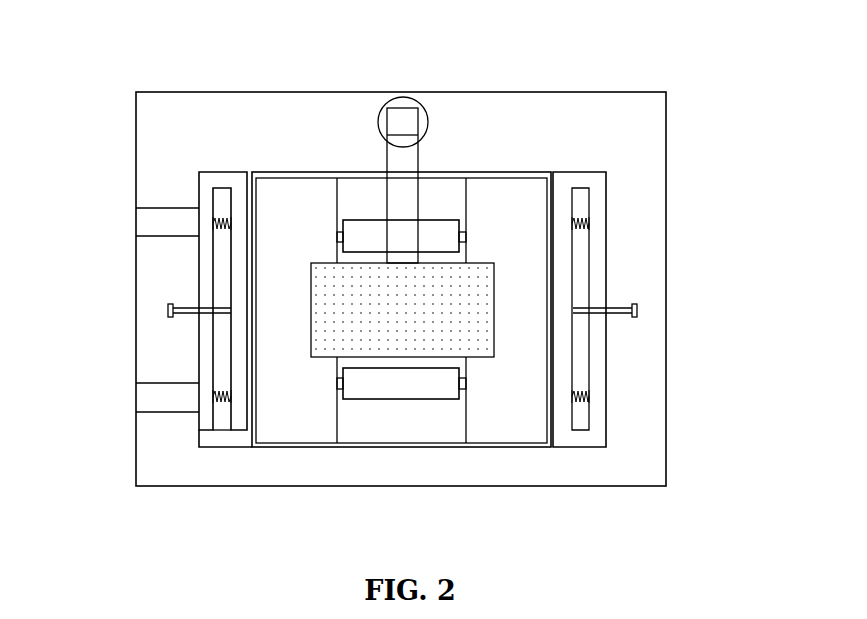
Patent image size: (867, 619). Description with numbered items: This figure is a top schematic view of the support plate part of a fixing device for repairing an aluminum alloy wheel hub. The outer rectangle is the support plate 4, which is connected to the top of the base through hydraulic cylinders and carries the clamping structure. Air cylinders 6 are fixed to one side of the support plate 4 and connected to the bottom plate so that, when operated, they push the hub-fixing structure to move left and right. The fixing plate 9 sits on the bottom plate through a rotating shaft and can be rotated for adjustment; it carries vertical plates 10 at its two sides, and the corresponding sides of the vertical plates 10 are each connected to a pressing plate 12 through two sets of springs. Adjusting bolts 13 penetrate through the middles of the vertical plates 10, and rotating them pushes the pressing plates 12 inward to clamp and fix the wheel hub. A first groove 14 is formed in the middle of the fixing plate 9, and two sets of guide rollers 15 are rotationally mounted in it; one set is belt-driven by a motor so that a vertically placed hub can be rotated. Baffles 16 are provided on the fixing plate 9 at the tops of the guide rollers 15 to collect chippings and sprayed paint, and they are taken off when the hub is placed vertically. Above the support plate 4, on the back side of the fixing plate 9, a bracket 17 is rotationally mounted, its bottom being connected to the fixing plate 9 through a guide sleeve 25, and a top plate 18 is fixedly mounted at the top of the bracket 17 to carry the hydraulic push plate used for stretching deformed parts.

The support plate 4 is at (633, 217).
The air cylinder 6 is at (168, 235).
The fixing plate 9 is at (213, 172).
The vertical plate 10 is at (207, 430).
The pressing plate 12 is at (563, 432).
The adjusting bolt 13 is at (185, 317).
The first groove 14 is at (385, 416).
The guide roller 15 is at (444, 393).
The baffle 16 is at (508, 195).
The bracket 17 is at (402, 160).
The top plate 18 is at (478, 282).
The guide sleeve 25 is at (384, 104).